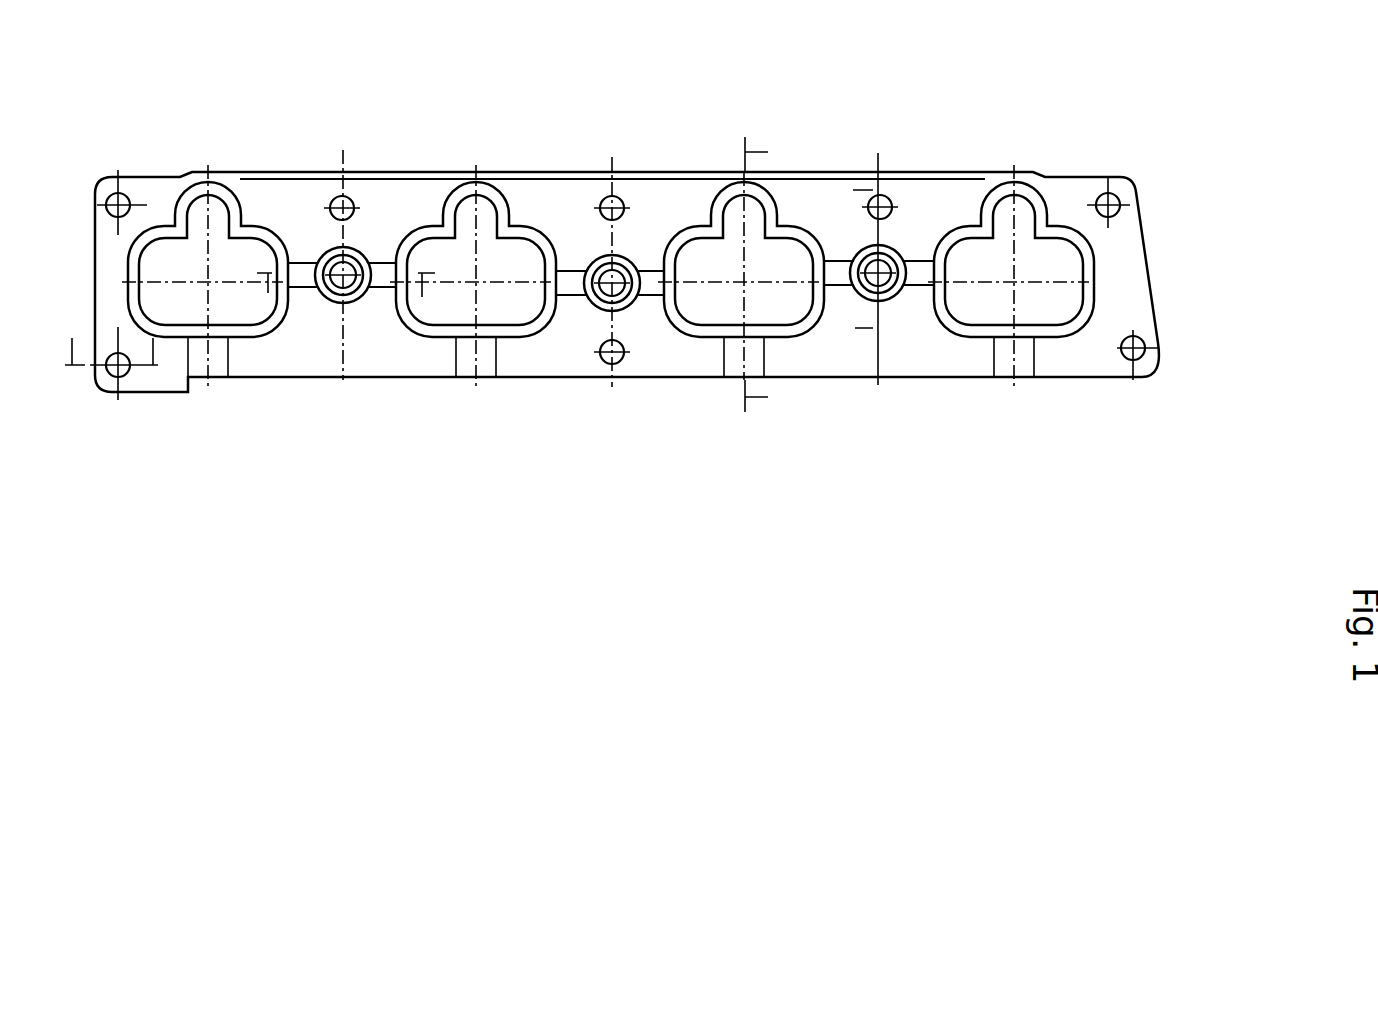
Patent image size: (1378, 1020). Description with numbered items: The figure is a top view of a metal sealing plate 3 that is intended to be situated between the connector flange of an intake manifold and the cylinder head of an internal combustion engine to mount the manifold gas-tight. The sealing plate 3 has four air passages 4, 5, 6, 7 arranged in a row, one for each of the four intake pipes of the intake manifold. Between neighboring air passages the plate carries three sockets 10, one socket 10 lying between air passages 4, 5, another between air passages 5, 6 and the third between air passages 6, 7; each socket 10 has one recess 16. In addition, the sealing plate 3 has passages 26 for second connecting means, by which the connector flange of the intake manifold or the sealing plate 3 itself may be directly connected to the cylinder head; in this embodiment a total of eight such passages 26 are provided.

The sealing plate 3 is at (1088, 360).
The air passage 4 is at (170, 303).
The air passage 5 is at (445, 310).
The air passage 6 is at (702, 298).
The air passage 7 is at (965, 300).
The socket 10 is at (880, 266).
The recess 16 is at (906, 460).
The passage 26 is at (1140, 358).